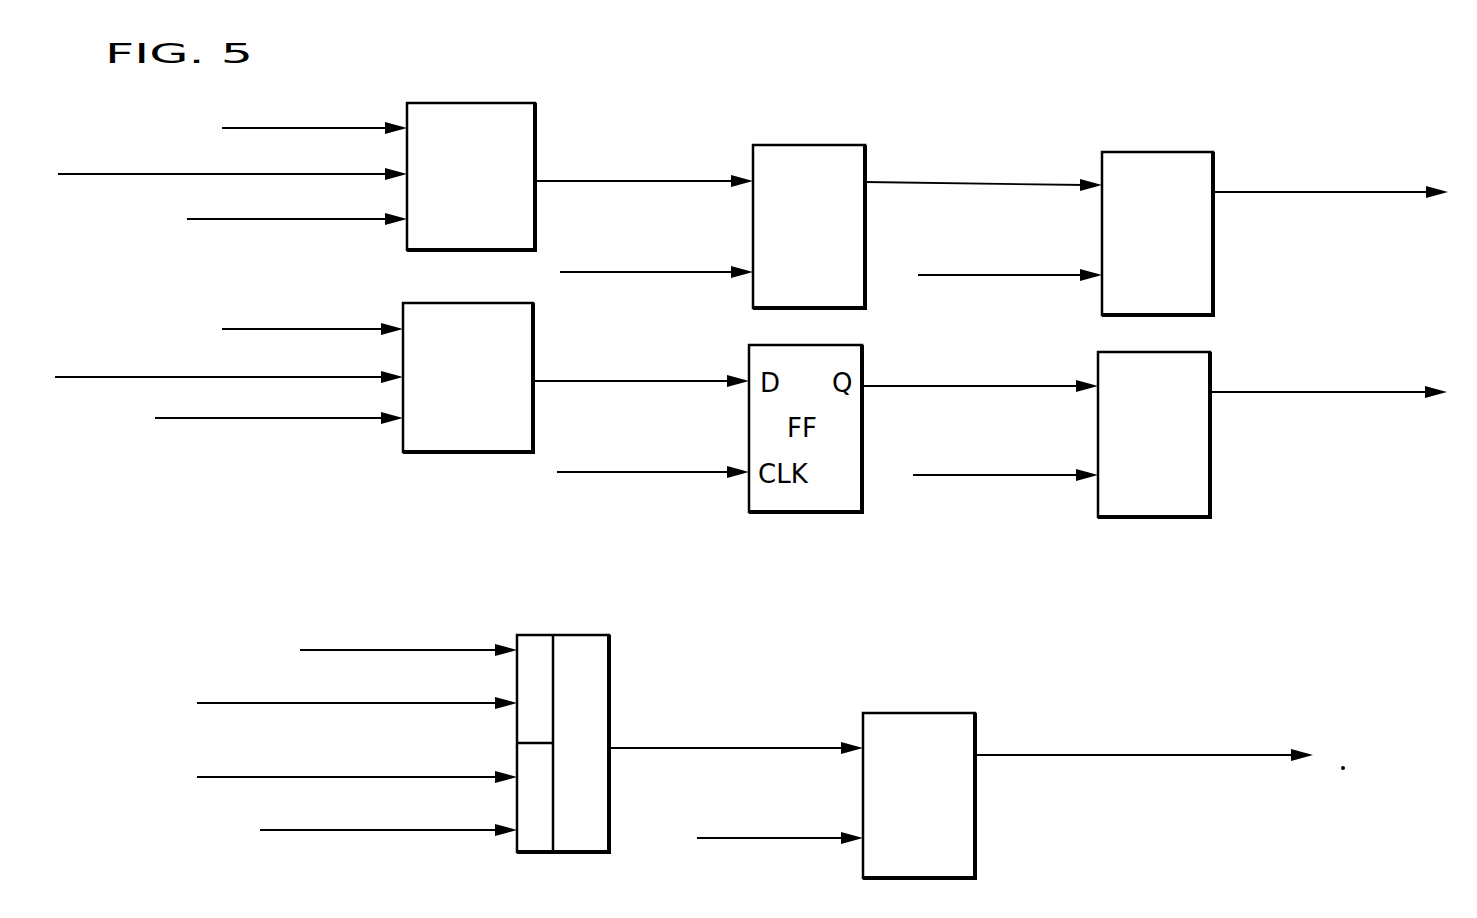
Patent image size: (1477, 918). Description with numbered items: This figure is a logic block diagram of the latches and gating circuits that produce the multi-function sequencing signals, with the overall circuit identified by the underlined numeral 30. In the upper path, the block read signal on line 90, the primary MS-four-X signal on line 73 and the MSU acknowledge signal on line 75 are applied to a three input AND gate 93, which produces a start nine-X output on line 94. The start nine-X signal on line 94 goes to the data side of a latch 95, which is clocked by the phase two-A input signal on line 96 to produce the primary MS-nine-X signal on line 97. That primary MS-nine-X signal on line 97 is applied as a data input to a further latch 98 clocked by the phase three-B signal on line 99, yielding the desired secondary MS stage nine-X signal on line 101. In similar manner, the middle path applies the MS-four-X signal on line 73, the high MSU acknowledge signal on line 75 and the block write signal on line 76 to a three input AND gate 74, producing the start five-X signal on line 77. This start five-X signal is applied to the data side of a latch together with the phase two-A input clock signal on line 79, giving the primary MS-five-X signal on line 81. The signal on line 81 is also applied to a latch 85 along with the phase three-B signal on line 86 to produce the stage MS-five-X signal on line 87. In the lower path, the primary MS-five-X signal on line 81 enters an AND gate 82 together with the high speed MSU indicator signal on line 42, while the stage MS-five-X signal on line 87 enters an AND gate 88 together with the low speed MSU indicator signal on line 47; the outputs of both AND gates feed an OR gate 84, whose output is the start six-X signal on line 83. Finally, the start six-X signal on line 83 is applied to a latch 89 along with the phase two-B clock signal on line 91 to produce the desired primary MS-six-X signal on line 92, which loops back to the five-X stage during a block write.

The memory stage control logic 30 is at (699, 107).
The high speed MSU indicator signal line 42 is at (222, 702).
The low speed MSU indicator signal line 47 is at (235, 778).
The MS4X signal line 73 is at (345, 128).
The three input AND gate 74 is at (425, 455).
The MSU acknowledge 1 signal line 75 is at (105, 175).
The block write signal line 76 is at (240, 420).
The start 5X signal line 77 is at (652, 383).
The phase 2A input clock signal line 79 is at (653, 474).
The primary MS5X signal line 81 is at (988, 388).
The AND gate 82 is at (535, 635).
The start 6X signal line 83 is at (750, 749).
The OR gate 84 is at (610, 668).
The latch 85 is at (1210, 466).
The phase 3B signal line 86 is at (996, 477).
The stage MS5X signal line 87 is at (1268, 393).
The AND gate 88 is at (535, 855).
The latch 89 is at (900, 713).
The block read signal line 90 is at (258, 220).
The phase 2B clock signal line 91 is at (780, 840).
The primary MS6X signal line 92 is at (1178, 755).
The three input AND gate 93 is at (472, 103).
The start 9X signal line 94 is at (658, 182).
The latch 95 is at (808, 145).
The phase 2A input signal line 96 is at (656, 273).
The primary MS9X signal line 97 is at (990, 186).
The latch 98 is at (1213, 278).
The phase 3B signal line 99 is at (999, 276).
The secondary MS stage 9X signal line 101 is at (1272, 193).